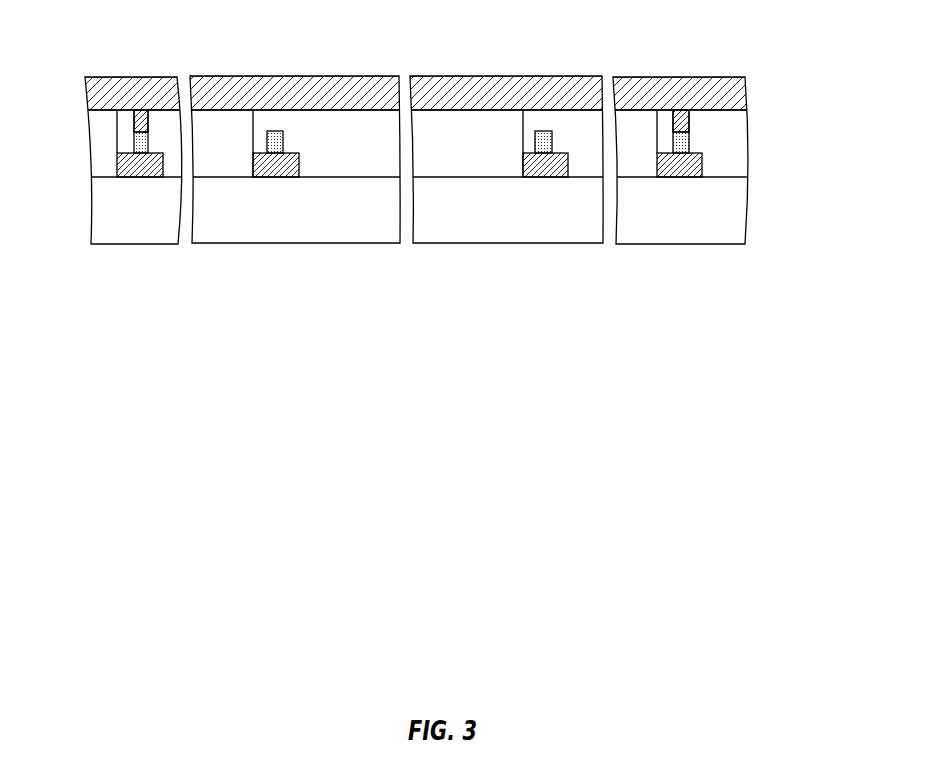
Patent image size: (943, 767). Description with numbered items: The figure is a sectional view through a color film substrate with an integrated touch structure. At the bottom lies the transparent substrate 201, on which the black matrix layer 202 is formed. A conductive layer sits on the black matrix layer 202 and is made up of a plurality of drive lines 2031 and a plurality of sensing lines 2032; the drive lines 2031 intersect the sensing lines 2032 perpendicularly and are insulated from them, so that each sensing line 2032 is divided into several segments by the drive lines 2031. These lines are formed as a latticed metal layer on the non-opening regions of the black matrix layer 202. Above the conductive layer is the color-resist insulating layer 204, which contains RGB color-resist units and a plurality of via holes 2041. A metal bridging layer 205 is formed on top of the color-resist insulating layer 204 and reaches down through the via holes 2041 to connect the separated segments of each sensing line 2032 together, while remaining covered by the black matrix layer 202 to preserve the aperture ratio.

The transparent substrate 201 is at (733, 214).
The black matrix layer 202 is at (690, 171).
The drive line 2031 is at (275, 148).
The sensing line 2032 is at (138, 143).
The color-resist insulating layer 204 is at (733, 120).
The via hole 2041 is at (141, 114).
The metal bridging layer 205 is at (732, 91).